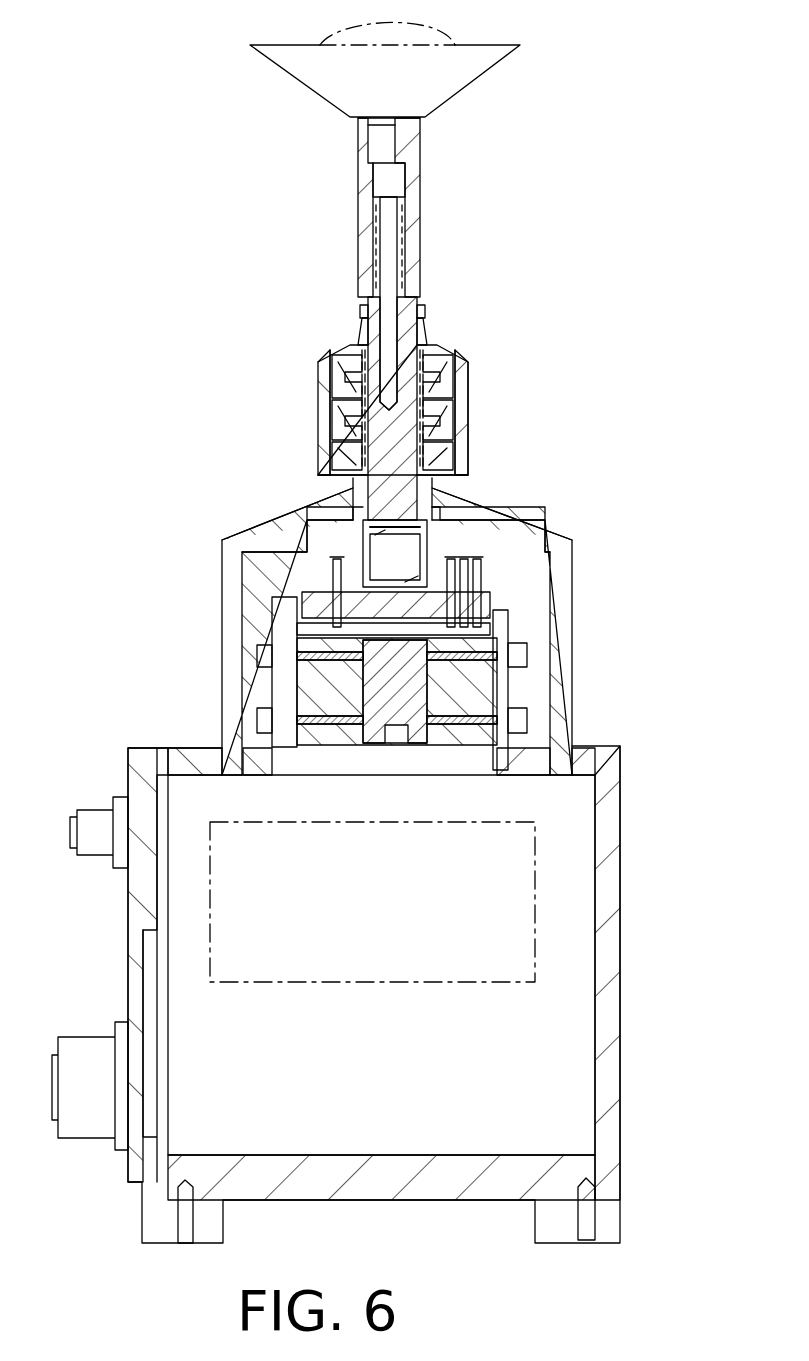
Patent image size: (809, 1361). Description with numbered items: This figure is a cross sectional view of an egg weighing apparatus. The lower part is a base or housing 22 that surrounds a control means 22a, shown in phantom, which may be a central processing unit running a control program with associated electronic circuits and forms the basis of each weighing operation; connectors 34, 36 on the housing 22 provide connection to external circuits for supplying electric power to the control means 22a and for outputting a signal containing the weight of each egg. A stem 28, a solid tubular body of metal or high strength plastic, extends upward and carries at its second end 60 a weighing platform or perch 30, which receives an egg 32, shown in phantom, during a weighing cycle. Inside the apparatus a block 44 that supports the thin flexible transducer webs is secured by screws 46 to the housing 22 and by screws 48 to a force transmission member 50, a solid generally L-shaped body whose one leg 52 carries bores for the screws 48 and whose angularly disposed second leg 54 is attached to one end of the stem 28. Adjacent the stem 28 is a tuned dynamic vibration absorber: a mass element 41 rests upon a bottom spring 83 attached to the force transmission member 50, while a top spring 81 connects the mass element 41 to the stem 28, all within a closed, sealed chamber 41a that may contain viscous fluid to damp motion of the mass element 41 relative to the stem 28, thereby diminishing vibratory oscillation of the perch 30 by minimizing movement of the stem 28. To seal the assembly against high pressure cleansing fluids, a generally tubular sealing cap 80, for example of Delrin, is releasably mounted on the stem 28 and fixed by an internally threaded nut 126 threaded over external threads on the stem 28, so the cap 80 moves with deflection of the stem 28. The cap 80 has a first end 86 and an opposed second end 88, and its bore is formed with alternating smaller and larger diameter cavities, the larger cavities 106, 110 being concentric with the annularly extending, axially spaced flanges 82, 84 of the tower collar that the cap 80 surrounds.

The housing 22 is at (620, 855).
The control means 22a is at (535, 955).
The stem 28 is at (420, 235).
The perch 30 is at (275, 63).
The egg 32 is at (327, 45).
The connector 34 is at (85, 1050).
The connector 36 is at (95, 812).
The mass element 41 is at (365, 545).
The chamber 41a is at (480, 520).
The block 44 is at (420, 690).
The screws 46 is at (527, 660).
The screws 48 is at (268, 650).
The force transmission member 50 is at (302, 597).
The leg 52 is at (297, 683).
The second leg 54 is at (490, 606).
The second end 60 is at (420, 147).
The sealing cap 80 is at (468, 378).
The spring 81 is at (470, 505).
The flange 82 is at (335, 455).
The spring 83 is at (485, 578).
The flange 84 is at (332, 392).
The first end 86 is at (424, 336).
The second end 88 is at (325, 477).
The cavity 106 is at (338, 452).
The cavity 110 is at (362, 395).
The nut 126 is at (420, 316).